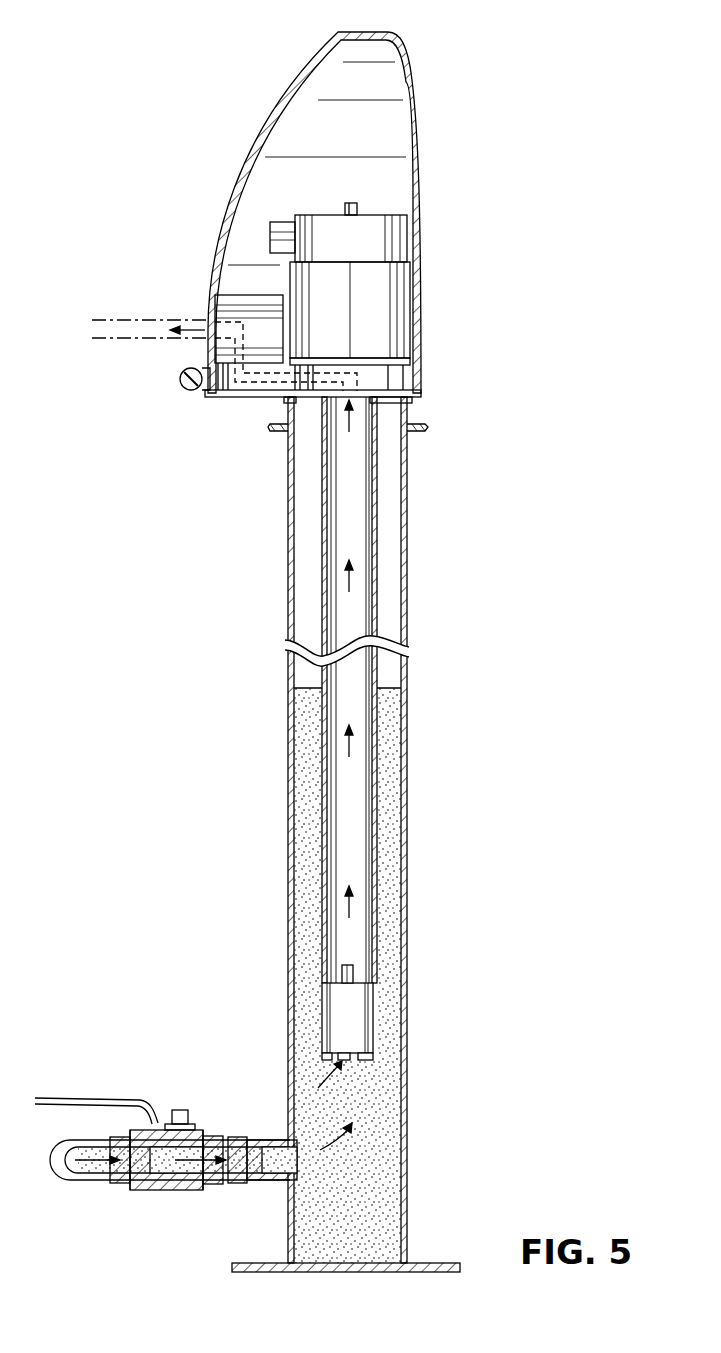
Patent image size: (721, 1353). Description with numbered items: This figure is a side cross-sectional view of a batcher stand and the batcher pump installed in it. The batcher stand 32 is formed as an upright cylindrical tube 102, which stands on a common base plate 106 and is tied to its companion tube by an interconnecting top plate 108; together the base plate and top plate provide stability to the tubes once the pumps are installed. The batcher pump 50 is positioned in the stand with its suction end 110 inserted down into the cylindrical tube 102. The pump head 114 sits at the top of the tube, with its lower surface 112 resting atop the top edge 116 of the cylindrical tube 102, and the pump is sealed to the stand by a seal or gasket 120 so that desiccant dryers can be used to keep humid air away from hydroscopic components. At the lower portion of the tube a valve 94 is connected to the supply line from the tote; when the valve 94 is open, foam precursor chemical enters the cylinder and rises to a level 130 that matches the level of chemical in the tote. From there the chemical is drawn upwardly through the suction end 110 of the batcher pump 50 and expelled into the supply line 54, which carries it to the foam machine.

The batcher pump 50 is at (289, 212).
The pump head 114 is at (219, 240).
The supply line 54 is at (138, 318).
The seal or gasket 120 is at (386, 392).
The top edge 116 is at (410, 401).
The lower surface 112 is at (247, 396).
The interconnecting top plate 108 is at (277, 432).
The level 130 is at (385, 688).
The batcher stand 32 is at (350, 830).
The upright cylindrical tube 102 is at (408, 742).
The suction end 110 is at (363, 1022).
The valve 94 is at (181, 1190).
The common base plate 106 is at (420, 1262).